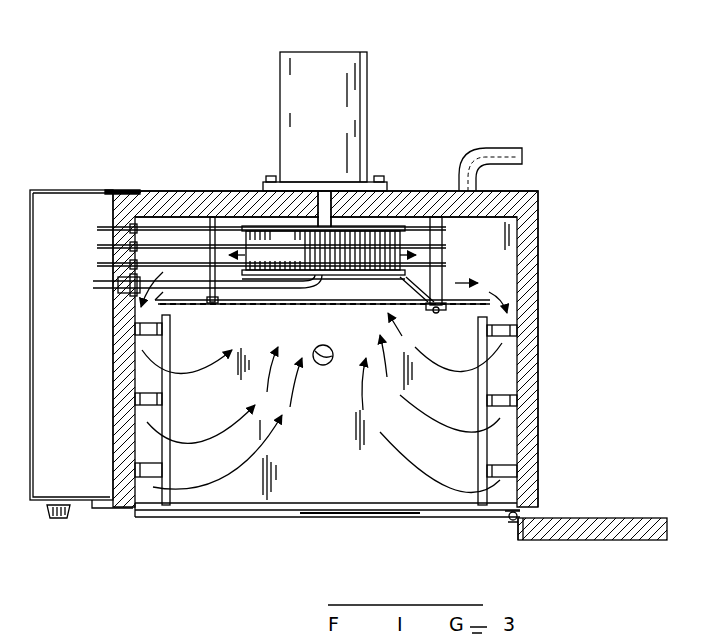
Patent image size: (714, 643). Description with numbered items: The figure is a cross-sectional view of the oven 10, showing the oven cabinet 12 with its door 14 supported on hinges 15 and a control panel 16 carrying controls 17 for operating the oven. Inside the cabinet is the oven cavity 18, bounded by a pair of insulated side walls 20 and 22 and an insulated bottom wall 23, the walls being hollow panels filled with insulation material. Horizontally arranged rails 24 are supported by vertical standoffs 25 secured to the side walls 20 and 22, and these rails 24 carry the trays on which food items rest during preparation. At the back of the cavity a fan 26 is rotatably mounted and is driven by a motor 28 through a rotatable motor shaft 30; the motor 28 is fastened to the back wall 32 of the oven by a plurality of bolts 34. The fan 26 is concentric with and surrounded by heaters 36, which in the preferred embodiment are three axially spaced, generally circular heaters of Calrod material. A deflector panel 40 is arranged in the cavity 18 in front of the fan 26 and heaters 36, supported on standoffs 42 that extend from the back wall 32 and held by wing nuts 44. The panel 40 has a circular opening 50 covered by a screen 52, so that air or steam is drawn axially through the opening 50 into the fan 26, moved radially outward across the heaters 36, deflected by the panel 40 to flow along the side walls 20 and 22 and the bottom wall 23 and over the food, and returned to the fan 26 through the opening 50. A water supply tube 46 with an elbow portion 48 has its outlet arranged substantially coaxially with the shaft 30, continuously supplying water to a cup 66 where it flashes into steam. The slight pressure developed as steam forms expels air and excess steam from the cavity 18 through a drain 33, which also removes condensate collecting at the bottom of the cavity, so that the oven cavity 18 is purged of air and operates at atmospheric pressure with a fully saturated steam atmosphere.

The oven 10 is at (576, 254).
The oven cabinet 12 is at (539, 401).
The door 14 is at (608, 539).
The hinges 15 is at (512, 520).
The control panel 16 is at (46, 502).
The controls 17 is at (62, 519).
The oven cavity 18 is at (330, 476).
The side wall 20 is at (487, 375).
The side wall 22 is at (137, 378).
The bottom wall 23 is at (378, 482).
The rails 24 is at (162, 466).
The vertical standoffs 25 is at (166, 338).
The fan 26 is at (381, 240).
The motor 28 is at (293, 86).
The motor shaft 30 is at (324, 190).
The back wall 32 is at (146, 191).
The drain 33 is at (493, 148).
The bolts 34 is at (381, 177).
The heaters 36 is at (447, 264).
The deflector panel 40 is at (482, 287).
The standoffs 42 is at (212, 217).
The wing nuts 44 is at (440, 309).
The water supply tube 46 is at (278, 273).
The elbow portion 48 is at (311, 289).
The circular opening 50 is at (386, 305).
The screen 52 is at (376, 304).
The cup 66 is at (275, 250).